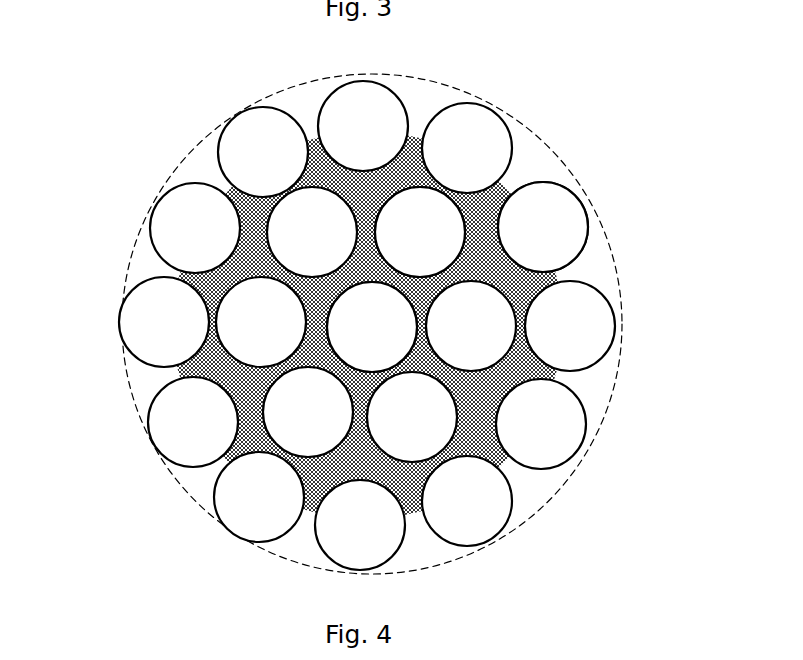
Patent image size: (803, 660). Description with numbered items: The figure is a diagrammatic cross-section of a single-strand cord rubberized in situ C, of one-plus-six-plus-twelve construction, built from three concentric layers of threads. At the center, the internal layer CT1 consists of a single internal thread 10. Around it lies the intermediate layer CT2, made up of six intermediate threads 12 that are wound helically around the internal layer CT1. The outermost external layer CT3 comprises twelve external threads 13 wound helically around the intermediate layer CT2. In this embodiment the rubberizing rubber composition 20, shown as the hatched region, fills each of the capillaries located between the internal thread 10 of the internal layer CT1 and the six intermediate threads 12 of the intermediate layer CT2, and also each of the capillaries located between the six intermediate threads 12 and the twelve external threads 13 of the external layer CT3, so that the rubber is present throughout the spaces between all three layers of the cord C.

The internal thread 10 is at (382, 334).
The intermediate threads 12 is at (257, 322).
The external threads 13 is at (185, 413).
The rubberizing rubber composition 20 is at (366, 228).
The single-strand cord rubberized in situ C is at (212, 90).
The internal layer CT1 is at (385, 322).
The intermediate layer CT2 is at (420, 232).
The external layer CT3 is at (550, 227).